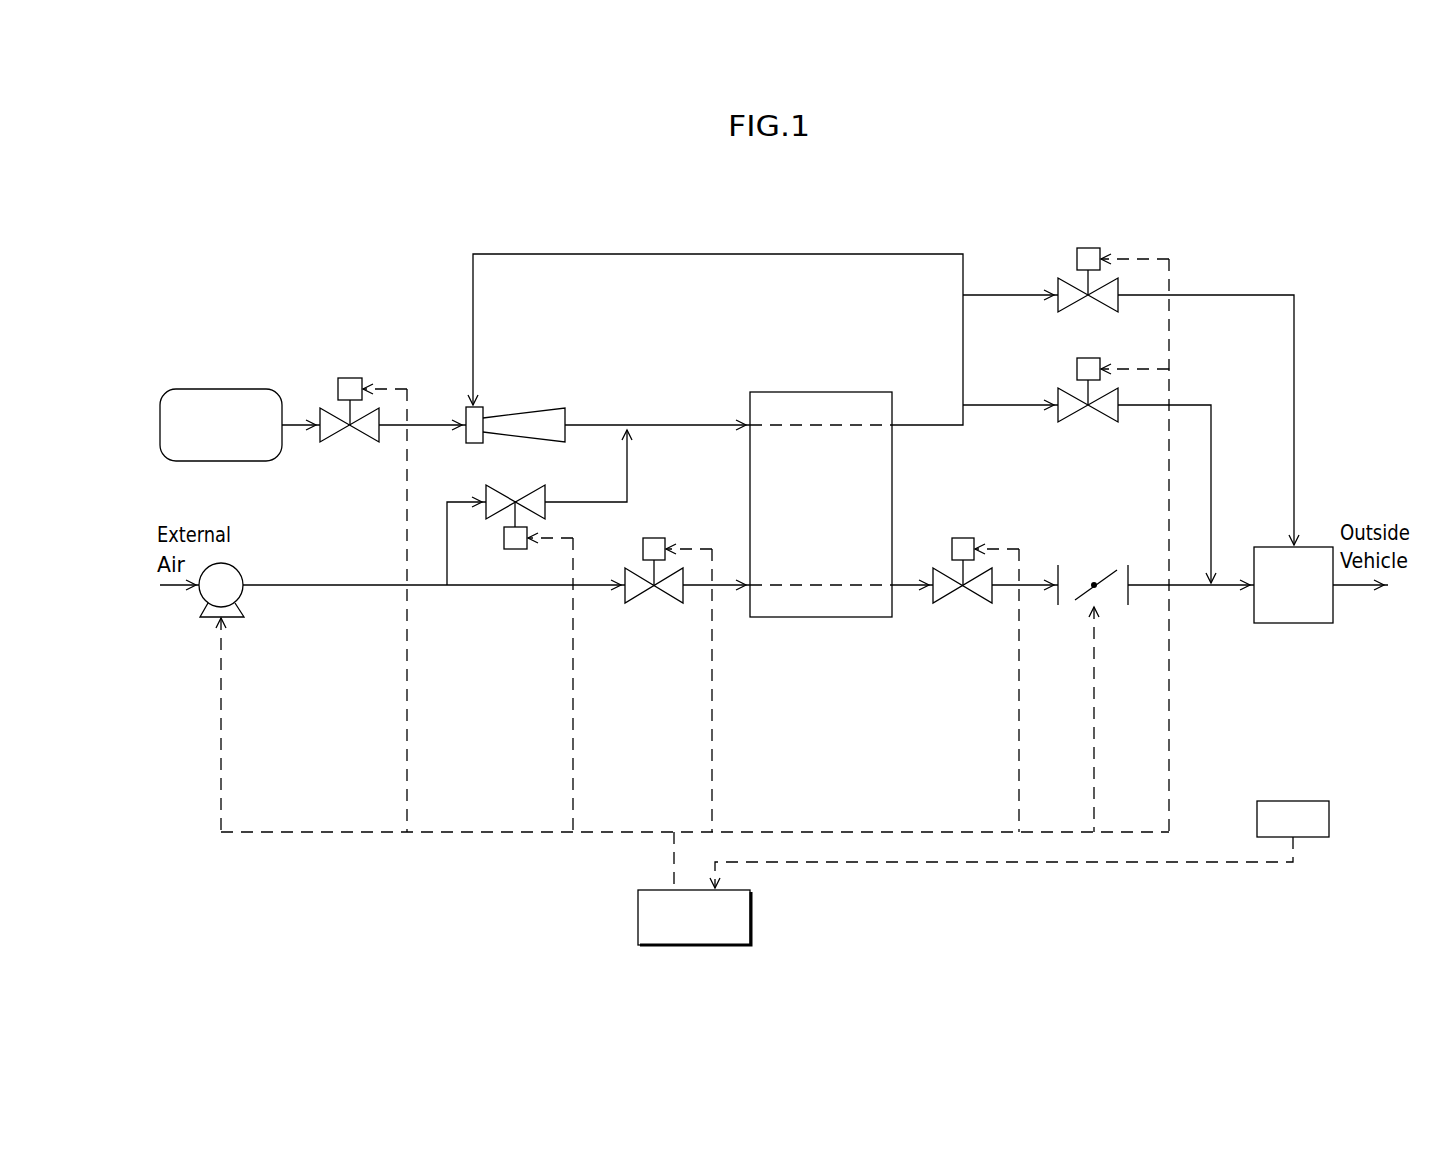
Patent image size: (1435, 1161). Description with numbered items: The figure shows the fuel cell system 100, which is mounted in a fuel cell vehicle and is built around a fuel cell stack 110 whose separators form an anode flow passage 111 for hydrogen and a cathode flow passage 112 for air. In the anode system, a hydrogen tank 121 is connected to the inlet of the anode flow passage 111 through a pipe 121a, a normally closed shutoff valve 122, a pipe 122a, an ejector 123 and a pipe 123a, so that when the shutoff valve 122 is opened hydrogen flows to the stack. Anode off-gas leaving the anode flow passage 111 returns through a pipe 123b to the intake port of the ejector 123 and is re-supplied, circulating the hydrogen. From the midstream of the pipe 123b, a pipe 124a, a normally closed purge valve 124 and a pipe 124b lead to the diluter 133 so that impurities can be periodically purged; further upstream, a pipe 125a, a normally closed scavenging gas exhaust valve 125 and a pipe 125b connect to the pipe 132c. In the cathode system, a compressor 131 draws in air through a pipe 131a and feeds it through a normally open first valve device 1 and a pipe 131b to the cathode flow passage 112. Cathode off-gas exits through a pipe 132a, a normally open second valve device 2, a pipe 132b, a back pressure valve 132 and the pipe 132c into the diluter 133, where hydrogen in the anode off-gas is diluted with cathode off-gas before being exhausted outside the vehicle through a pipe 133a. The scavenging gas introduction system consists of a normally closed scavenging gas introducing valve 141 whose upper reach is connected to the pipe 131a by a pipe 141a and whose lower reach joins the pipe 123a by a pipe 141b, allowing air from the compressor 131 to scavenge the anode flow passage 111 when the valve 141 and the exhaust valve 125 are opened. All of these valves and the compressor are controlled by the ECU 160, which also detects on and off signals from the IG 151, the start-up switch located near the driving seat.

The fuel cell system 100 is at (1022, 215).
The fuel cell stack 110 is at (857, 392).
The anode flow passage 111 is at (840, 430).
The cathode flow passage 112 is at (836, 582).
The hydrogen tank 121 is at (196, 388).
The pipe 121a is at (298, 430).
The shutoff valve 122 is at (347, 378).
The pipe 122a is at (437, 423).
The ejector 123 is at (524, 409).
The pipe 123a is at (684, 424).
The pipe 123b is at (697, 255).
The purge valve 124 is at (1091, 248).
The pipe 124a is at (1005, 294).
The pipe 124b is at (1280, 294).
The scavenging gas exhaust valve 125 is at (1096, 358).
The pipe 125a is at (1005, 404).
The pipe 125b is at (1199, 404).
The compressor 131 is at (240, 568).
The pipe 131a is at (308, 588).
The pipe 131b is at (722, 588).
The back pressure valve 132 is at (1106, 566).
The pipe 132a is at (903, 588).
The pipe 132b is at (1038, 588).
The pipe 132c is at (1198, 588).
The diluter 133 is at (1266, 547).
The pipe 133a is at (1346, 588).
The scavenging gas introducing valve 141 is at (504, 538).
The pipe 141a is at (452, 501).
The pipe 141b is at (628, 470).
The first valve device 1 is at (664, 532).
The second valve device 2 is at (975, 532).
The IG 151 is at (1317, 801).
The ECU 160 is at (750, 905).